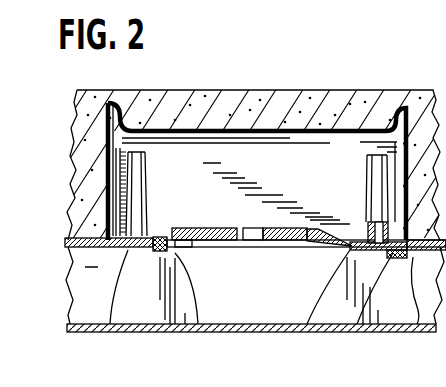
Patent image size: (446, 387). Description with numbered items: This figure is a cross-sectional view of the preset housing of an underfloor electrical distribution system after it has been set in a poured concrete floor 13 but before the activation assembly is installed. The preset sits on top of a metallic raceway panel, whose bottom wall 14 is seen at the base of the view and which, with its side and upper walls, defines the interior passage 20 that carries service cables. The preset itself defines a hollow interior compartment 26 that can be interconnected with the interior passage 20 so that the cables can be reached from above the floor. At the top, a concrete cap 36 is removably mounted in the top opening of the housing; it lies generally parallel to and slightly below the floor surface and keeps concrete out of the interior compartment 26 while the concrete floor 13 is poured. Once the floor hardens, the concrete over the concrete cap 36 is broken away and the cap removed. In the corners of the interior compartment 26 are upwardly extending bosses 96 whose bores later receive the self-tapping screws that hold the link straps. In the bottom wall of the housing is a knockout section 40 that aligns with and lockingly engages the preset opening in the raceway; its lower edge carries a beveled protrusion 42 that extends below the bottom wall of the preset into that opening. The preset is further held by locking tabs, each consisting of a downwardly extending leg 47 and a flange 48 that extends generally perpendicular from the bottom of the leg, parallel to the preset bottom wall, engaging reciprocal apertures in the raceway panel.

The concrete floor 13 is at (77, 118).
The concrete cap 36 is at (104, 142).
The upwardly extending bosses 96 is at (106, 187).
The interior passage 20 is at (66, 255).
The knockout section 40 is at (201, 228).
The interior compartment 26 is at (275, 153).
The flange 48 is at (116, 326).
The bottom wall 14 is at (154, 327).
The downwardly extending leg 47 is at (200, 326).
The beveled protrusion 42 is at (307, 326).